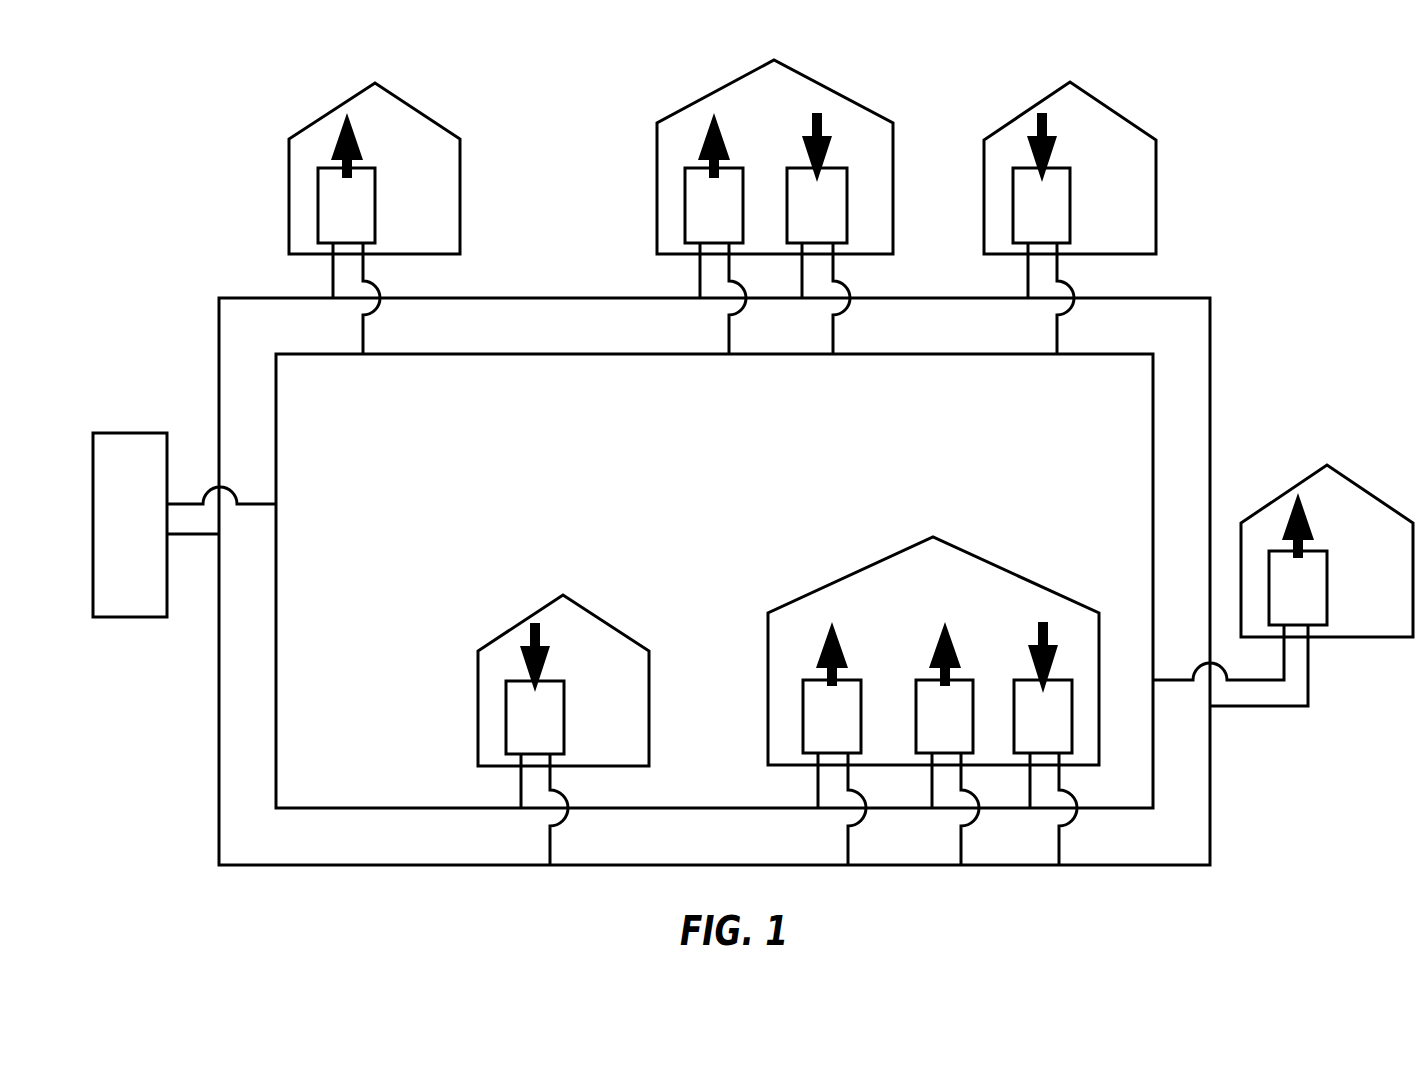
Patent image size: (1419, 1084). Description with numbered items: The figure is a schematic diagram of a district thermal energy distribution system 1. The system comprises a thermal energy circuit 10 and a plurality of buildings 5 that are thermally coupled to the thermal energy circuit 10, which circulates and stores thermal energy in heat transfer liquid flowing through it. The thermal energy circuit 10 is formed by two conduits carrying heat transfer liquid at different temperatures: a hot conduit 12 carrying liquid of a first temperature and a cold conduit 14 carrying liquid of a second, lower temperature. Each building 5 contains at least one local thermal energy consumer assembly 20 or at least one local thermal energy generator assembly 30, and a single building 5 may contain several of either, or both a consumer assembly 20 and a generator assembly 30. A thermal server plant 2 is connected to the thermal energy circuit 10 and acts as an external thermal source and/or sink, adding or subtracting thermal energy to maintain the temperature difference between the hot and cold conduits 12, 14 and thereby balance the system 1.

The district thermal energy distribution system 1 is at (212, 144).
The thermal server plant 2 is at (135, 447).
The building 5 is at (326, 128).
The thermal energy circuit 10 is at (302, 641).
The hot conduit 12 is at (236, 296).
The cold conduit 14 is at (280, 552).
The local thermal energy consumer assembly 20 is at (359, 208).
The local thermal energy generator assembly 30 is at (827, 181).